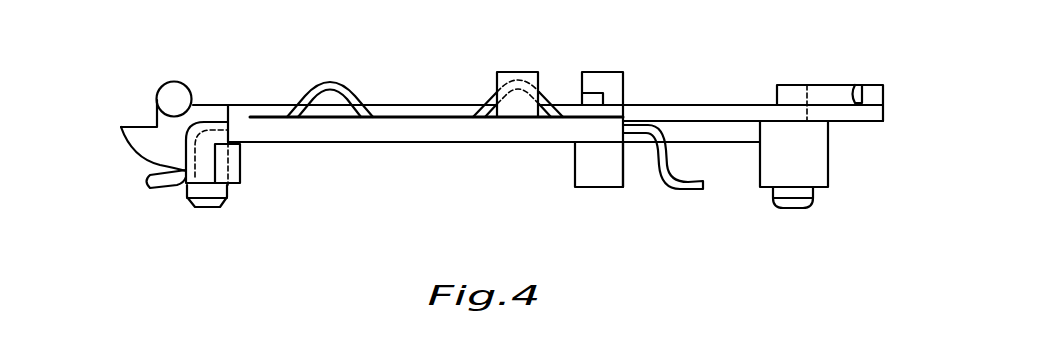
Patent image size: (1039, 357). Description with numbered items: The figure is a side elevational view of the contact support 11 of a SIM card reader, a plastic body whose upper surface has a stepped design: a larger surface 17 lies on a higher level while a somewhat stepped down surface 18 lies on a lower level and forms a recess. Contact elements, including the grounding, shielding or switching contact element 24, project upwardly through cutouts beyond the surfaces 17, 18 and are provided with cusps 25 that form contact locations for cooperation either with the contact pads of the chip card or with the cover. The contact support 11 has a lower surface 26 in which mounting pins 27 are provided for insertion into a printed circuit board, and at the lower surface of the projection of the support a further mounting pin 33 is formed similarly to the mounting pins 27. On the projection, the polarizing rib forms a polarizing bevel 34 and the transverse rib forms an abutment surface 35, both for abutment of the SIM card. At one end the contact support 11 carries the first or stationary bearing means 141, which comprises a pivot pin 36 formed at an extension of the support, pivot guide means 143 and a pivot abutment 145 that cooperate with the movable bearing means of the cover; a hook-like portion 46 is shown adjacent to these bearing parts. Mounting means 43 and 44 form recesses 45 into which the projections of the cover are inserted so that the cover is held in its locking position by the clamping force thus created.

The contact support 11 is at (490, 156).
The larger surface 17 is at (394, 105).
The stepped down surface 18 is at (425, 112).
The switch contact element 24 is at (157, 190).
The cusp 25 is at (330, 85).
The lower surface 26 is at (528, 143).
The mounting pin 27 is at (212, 188).
The mounting pin 33 is at (810, 193).
The polarizing bevel 34 is at (820, 92).
The abutment surface 35 is at (853, 80).
The pivot pin 36 is at (178, 95).
The mounting means 43 is at (618, 58).
The mounting means 44 is at (500, 62).
The recess 45 is at (582, 102).
The hook 46 is at (122, 138).
The first bearing means 141 is at (186, 67).
The pivot guide means 143 is at (129, 156).
The pivot abutment 145 is at (183, 173).